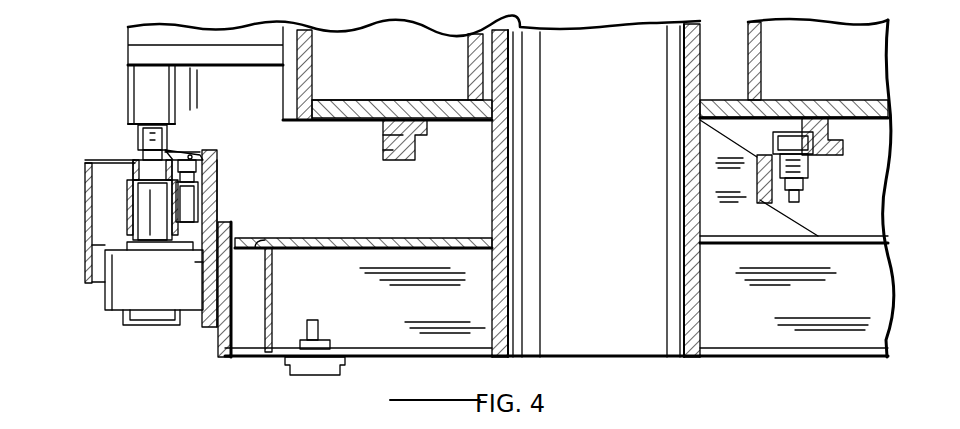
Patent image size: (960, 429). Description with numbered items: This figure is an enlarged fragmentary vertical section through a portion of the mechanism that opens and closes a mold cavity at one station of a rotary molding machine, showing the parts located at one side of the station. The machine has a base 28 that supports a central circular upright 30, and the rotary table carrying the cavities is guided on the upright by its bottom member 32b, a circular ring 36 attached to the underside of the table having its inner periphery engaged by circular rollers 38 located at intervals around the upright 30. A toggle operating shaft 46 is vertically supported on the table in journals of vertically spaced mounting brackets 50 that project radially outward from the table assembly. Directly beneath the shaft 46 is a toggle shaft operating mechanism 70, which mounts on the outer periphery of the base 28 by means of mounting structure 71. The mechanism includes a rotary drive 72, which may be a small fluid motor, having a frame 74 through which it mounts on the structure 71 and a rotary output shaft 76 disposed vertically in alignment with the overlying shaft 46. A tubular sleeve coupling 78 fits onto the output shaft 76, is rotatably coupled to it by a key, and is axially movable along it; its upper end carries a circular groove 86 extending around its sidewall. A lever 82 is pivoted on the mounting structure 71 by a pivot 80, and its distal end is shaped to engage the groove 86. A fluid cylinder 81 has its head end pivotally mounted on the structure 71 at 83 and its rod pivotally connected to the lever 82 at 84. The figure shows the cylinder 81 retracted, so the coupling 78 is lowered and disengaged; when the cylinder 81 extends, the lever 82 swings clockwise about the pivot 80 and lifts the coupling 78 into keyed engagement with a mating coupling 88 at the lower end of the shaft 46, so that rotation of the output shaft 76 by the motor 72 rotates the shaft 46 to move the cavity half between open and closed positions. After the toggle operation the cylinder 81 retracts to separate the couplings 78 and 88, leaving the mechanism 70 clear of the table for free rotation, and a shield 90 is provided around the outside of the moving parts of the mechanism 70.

The base 28 is at (432, 240).
The central circular upright 30 is at (490, 170).
The bottom member 32b is at (870, 102).
The circular ring 36 is at (843, 155).
The circular rollers 38 is at (788, 130).
The toggle operating shaft 46 is at (140, 137).
The mounting bracket 50 is at (290, 78).
The toggle shaft operating mechanism 70 is at (98, 343).
The mounting structure 71 is at (225, 215).
The rotary drive 72 is at (90, 250).
The frame 74 is at (165, 300).
The rotary output shaft 76 is at (128, 222).
The tubular sleeve coupling 78 is at (138, 200).
The pivot 80 is at (218, 158).
The fluid cylinder 81 is at (200, 208).
The lever 82 is at (200, 152).
The head end pivotal mount 83 is at (233, 234).
The rod pivot connection 84 is at (185, 152).
The circular groove 86 is at (135, 165).
The mating coupling 88 is at (140, 146).
The shield 90 is at (80, 280).